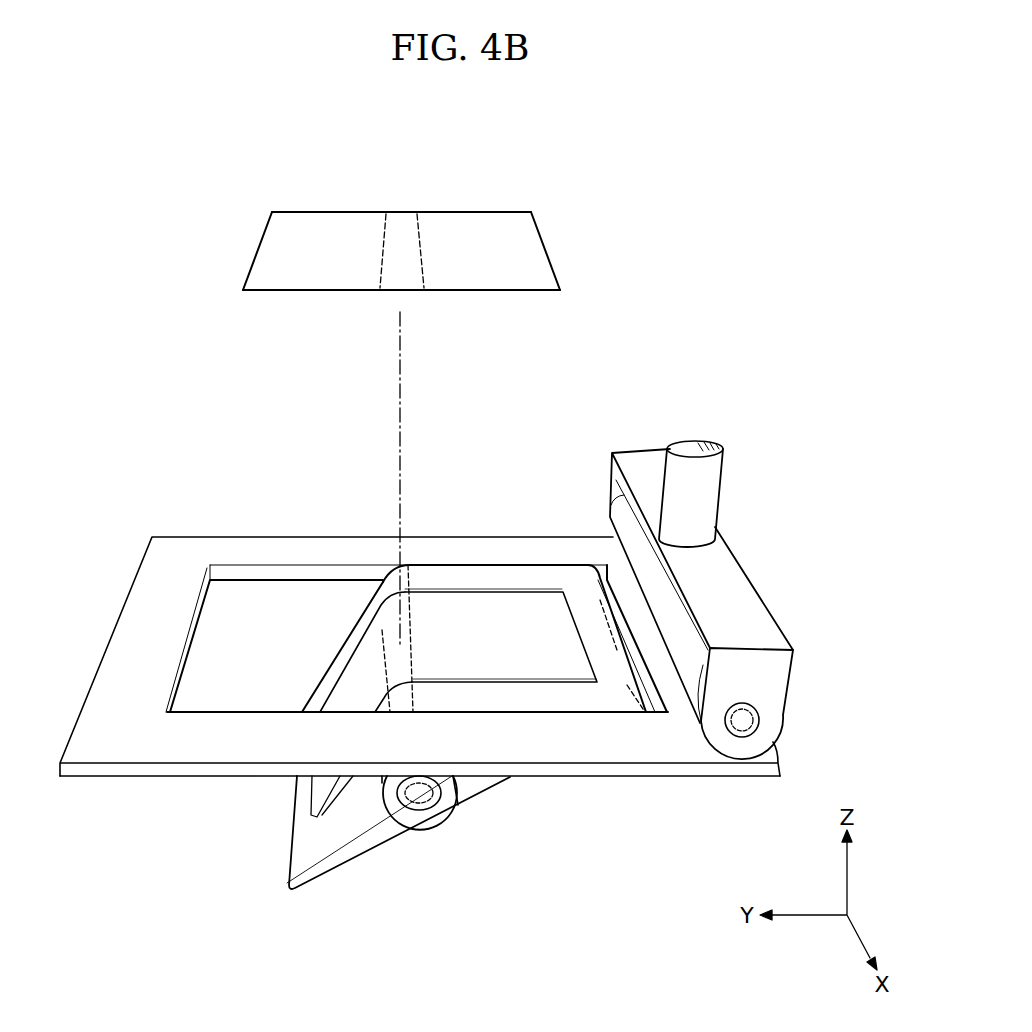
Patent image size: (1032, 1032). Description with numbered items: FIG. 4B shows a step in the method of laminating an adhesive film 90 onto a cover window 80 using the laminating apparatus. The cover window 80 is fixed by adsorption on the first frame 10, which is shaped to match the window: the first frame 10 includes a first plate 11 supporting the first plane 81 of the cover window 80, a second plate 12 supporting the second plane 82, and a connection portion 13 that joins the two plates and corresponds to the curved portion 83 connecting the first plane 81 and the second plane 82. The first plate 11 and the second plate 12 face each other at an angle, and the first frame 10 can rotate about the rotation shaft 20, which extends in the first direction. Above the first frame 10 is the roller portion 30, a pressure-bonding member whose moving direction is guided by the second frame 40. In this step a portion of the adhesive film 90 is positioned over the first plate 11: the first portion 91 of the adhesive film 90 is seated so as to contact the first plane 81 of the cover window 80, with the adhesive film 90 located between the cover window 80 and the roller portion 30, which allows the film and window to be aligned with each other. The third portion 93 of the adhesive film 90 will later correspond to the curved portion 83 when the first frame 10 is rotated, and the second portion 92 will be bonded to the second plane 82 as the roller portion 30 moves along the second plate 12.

The first frame 10 is at (336, 640).
The first plate 11 is at (485, 578).
The second plate 12 is at (307, 818).
The connection portion 13 is at (393, 580).
The rotation shaft 20 is at (422, 797).
The roller portion 30 is at (740, 550).
The second frame 40 is at (637, 781).
The cover window 80 is at (357, 595).
The first plane 81 is at (438, 607).
The second plane 82 is at (352, 690).
The curved portion 83 is at (390, 633).
The adhesive film 90 is at (441, 219).
The first portion 91 is at (503, 225).
The second portion 92 is at (305, 225).
The third portion 93 is at (403, 225).